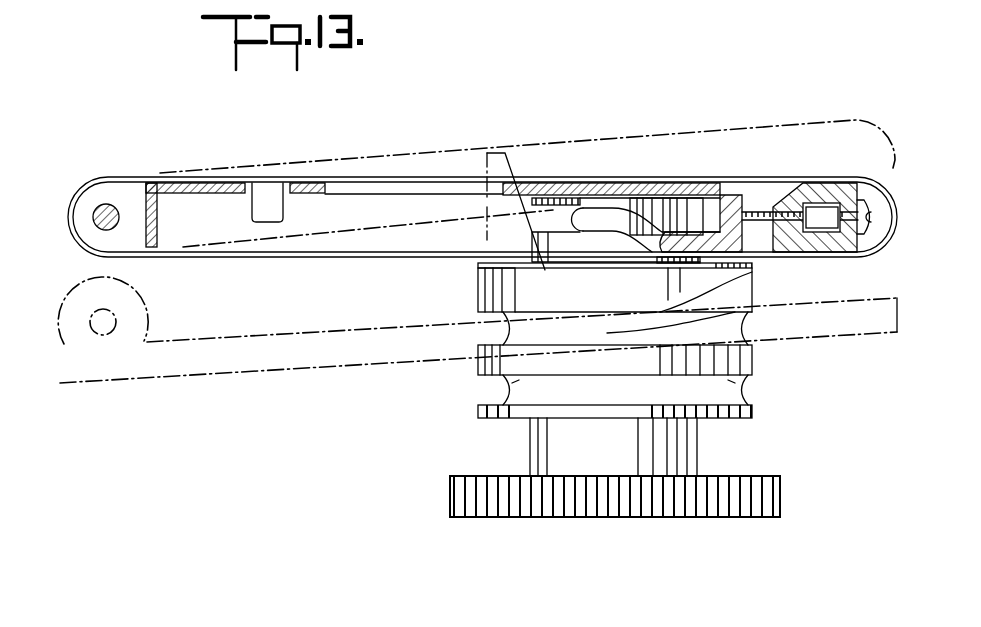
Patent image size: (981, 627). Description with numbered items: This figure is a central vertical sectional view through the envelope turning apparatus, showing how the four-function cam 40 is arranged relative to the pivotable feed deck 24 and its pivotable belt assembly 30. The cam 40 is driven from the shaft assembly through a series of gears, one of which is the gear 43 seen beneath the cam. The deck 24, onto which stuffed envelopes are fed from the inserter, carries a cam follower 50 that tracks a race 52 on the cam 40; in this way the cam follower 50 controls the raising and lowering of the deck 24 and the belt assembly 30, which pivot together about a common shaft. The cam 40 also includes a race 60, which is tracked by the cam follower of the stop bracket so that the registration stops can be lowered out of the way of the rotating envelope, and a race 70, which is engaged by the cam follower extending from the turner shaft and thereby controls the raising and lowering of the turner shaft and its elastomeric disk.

The pivotable feed deck 24 is at (201, 188).
The pivotable belt assembly 30 is at (275, 258).
The four-function cam 40 is at (752, 358).
The gear 43 is at (760, 517).
The cam follower 50 is at (656, 212).
The race 52 is at (581, 210).
The race 60 is at (723, 288).
The race 70 is at (740, 392).